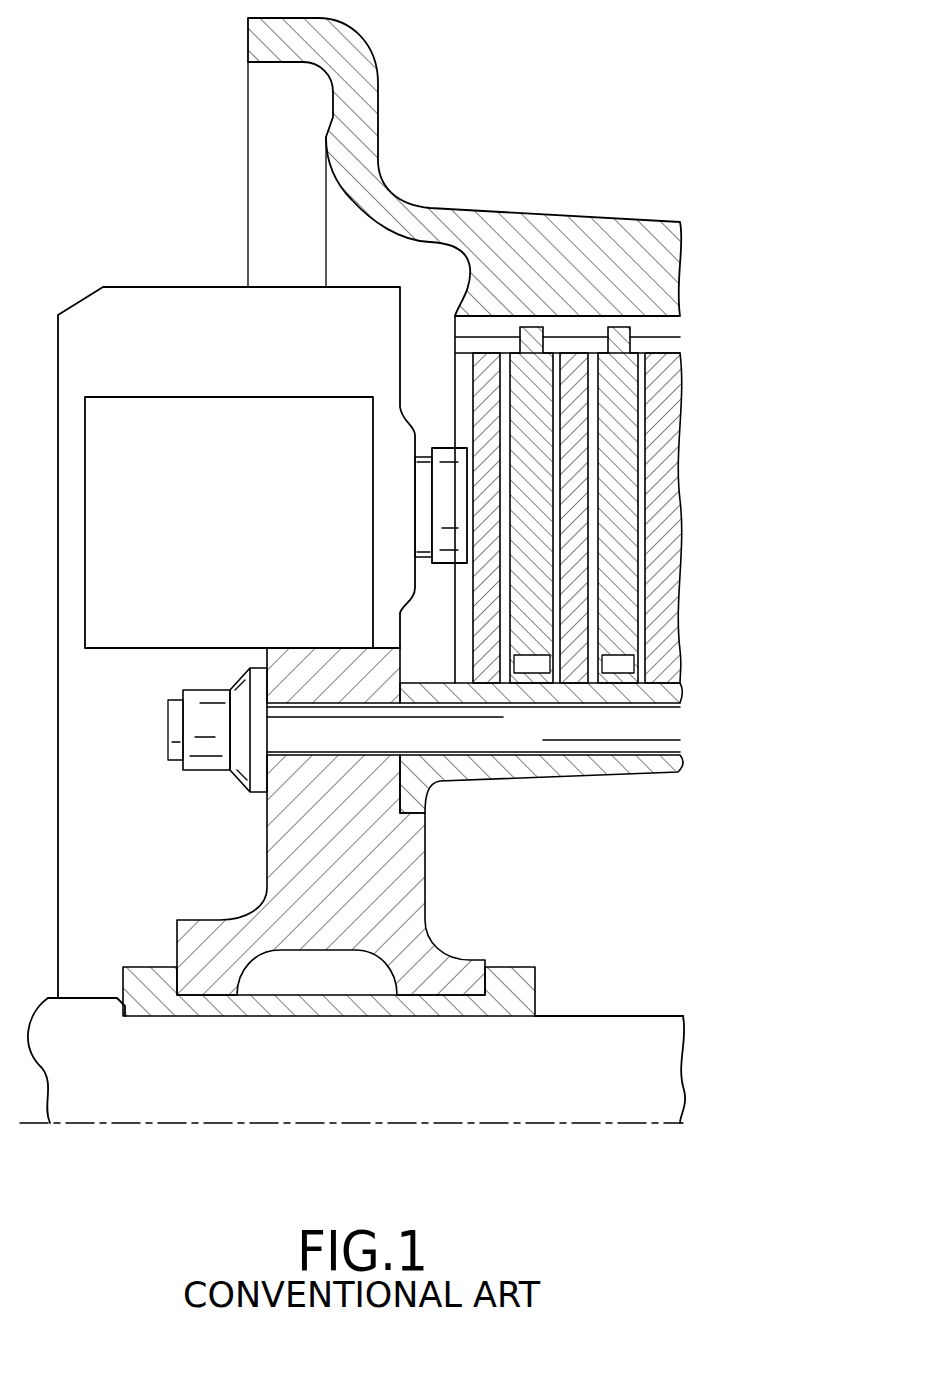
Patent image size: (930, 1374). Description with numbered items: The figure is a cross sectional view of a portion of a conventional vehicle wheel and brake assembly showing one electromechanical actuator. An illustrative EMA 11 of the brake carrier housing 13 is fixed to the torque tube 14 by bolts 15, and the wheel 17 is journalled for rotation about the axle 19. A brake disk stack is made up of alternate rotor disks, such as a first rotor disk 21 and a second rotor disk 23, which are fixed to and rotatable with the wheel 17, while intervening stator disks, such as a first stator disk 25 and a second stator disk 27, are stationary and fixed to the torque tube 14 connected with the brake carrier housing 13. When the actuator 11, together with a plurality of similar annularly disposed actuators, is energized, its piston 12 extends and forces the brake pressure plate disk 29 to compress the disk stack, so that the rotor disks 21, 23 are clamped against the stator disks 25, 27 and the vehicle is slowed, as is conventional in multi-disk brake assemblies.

The electromechanical actuator 11 is at (240, 533).
The piston 12 is at (445, 463).
The brake carrier housing 13 is at (270, 912).
The torque tube 14 is at (595, 776).
The bolts 15 is at (168, 735).
The wheel 17 is at (267, 36).
The axle 19 is at (130, 1100).
The first rotor disk 21 is at (532, 363).
The second rotor disk 23 is at (620, 418).
The first stator disk 25 is at (660, 517).
The second stator disk 27 is at (572, 363).
The brake pressure plate disk 29 is at (490, 367).